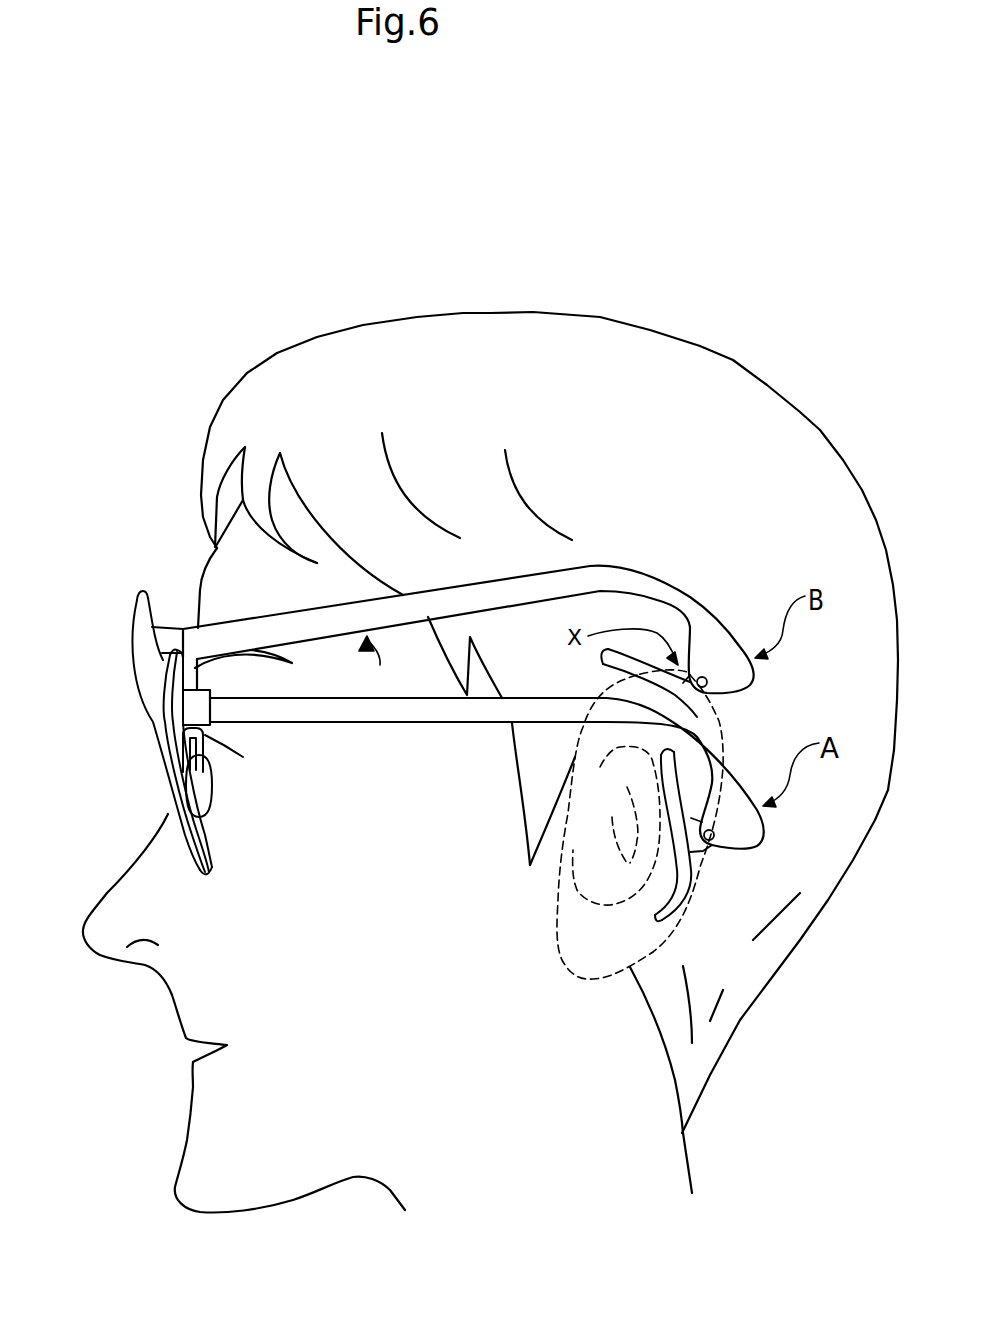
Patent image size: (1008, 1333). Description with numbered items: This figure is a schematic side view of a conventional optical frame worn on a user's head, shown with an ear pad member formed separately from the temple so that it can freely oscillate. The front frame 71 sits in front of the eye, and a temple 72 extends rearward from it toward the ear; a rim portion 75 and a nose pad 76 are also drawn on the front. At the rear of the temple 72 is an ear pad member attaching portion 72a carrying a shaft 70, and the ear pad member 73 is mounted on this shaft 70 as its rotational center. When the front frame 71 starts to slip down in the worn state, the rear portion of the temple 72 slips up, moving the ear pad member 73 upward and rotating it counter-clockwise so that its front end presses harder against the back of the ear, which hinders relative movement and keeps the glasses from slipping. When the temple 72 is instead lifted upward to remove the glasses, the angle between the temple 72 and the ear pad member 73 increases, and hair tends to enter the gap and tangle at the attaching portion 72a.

The shaft 70 is at (711, 855).
The front frame 71 is at (212, 863).
The temple 72 is at (385, 710).
The ear pad member attaching portion 72a is at (713, 843).
The ear pad member 73 is at (655, 908).
The lens rim (far side) 75 is at (158, 756).
The nose pad 76 is at (210, 793).